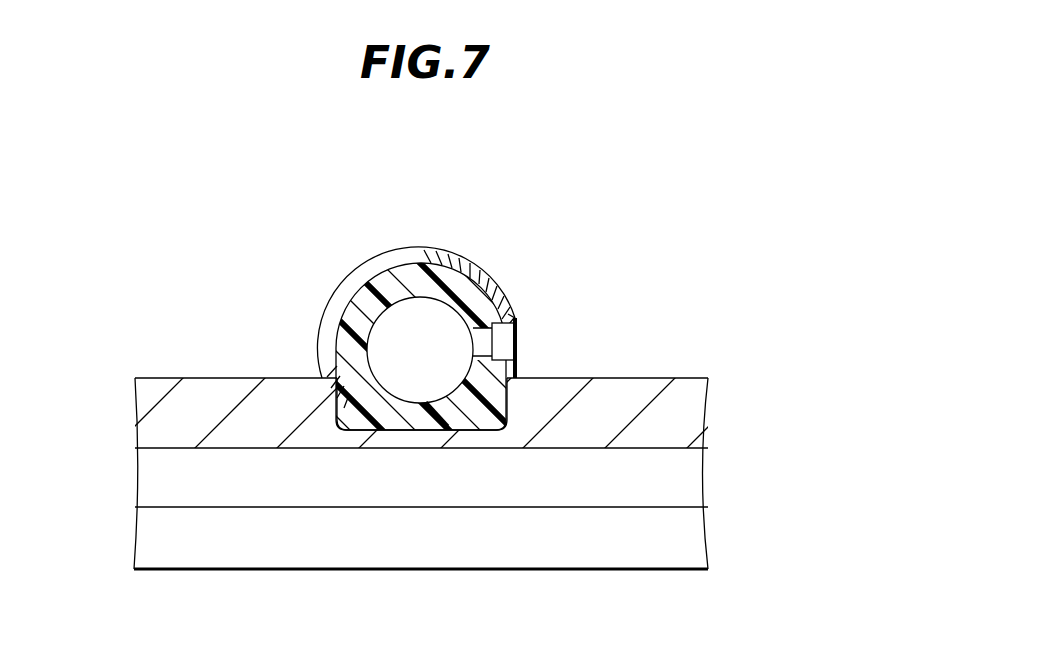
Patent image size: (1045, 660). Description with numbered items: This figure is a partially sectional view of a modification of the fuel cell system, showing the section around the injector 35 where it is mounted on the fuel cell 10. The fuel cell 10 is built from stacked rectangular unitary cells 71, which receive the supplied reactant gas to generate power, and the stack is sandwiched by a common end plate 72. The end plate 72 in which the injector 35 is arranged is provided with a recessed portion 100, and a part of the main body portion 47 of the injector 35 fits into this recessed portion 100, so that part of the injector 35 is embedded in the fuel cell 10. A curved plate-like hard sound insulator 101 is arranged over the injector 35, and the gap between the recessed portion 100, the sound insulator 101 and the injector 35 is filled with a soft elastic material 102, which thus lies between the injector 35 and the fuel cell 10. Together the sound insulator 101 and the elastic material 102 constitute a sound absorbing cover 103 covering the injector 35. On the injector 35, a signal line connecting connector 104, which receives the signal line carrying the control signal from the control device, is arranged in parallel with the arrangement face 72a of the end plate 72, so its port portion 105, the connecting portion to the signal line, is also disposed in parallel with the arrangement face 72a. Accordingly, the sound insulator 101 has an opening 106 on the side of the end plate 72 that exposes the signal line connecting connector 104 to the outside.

The fuel cell 10 is at (740, 294).
The injector 35 is at (418, 290).
The main body portion 47 is at (443, 402).
The unitary cells 71 is at (691, 482).
The end plate 72 is at (688, 378).
The arrangement face 72a is at (175, 377).
The recessed portion 100 is at (382, 430).
The sound insulator 101 is at (353, 278).
The elastic material 102 is at (345, 352).
The sound absorbing cover 103 is at (325, 303).
The signal line connecting connector 104 is at (504, 338).
The port portion 105 is at (517, 347).
The opening 106 is at (516, 318).